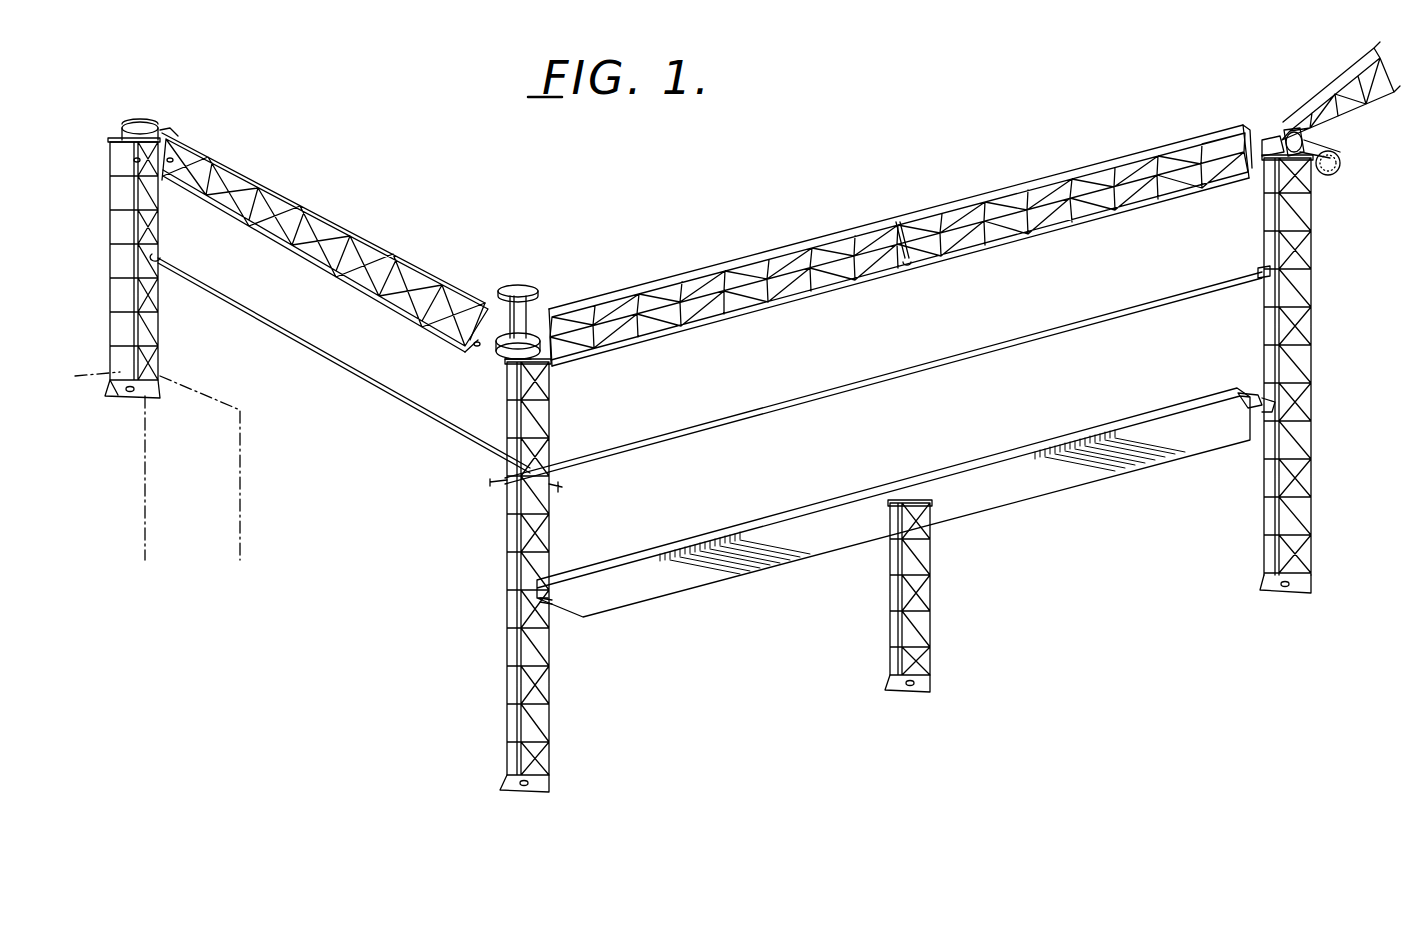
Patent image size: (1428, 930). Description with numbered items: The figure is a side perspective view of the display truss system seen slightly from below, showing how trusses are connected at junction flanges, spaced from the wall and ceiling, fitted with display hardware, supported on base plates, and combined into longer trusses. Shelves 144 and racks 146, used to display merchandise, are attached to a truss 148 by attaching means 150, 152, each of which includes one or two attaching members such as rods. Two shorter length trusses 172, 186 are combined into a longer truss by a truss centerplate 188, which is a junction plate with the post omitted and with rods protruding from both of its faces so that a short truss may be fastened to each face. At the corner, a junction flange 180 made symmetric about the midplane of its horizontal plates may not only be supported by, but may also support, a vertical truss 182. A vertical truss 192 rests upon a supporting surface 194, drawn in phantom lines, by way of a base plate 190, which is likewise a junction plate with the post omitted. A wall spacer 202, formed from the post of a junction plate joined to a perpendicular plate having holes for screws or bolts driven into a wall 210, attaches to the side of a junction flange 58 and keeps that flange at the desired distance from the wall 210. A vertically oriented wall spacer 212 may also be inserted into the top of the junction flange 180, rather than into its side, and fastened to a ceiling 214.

The junction flange 58 is at (1266, 137).
The shelves 144 is at (1027, 449).
The racks 146 is at (730, 424).
The truss 148 is at (1312, 347).
The attaching means 150 is at (1288, 414).
The attaching means 152 is at (1262, 273).
The shorter length truss 172 is at (900, 245).
The junction flange 180 is at (549, 299).
The vertical truss 182 is at (551, 421).
The shorter length truss 186 is at (733, 267).
The truss centerplate 188 is at (905, 266).
The base plate 190 is at (131, 400).
The vertical truss 192 is at (161, 337).
The supporting surface 194 is at (204, 377).
The wall spacer 202 is at (1341, 166).
The wall 210 is at (1380, 217).
The vertically oriented wall spacer 212 is at (518, 288).
The ceiling 214 is at (503, 250).